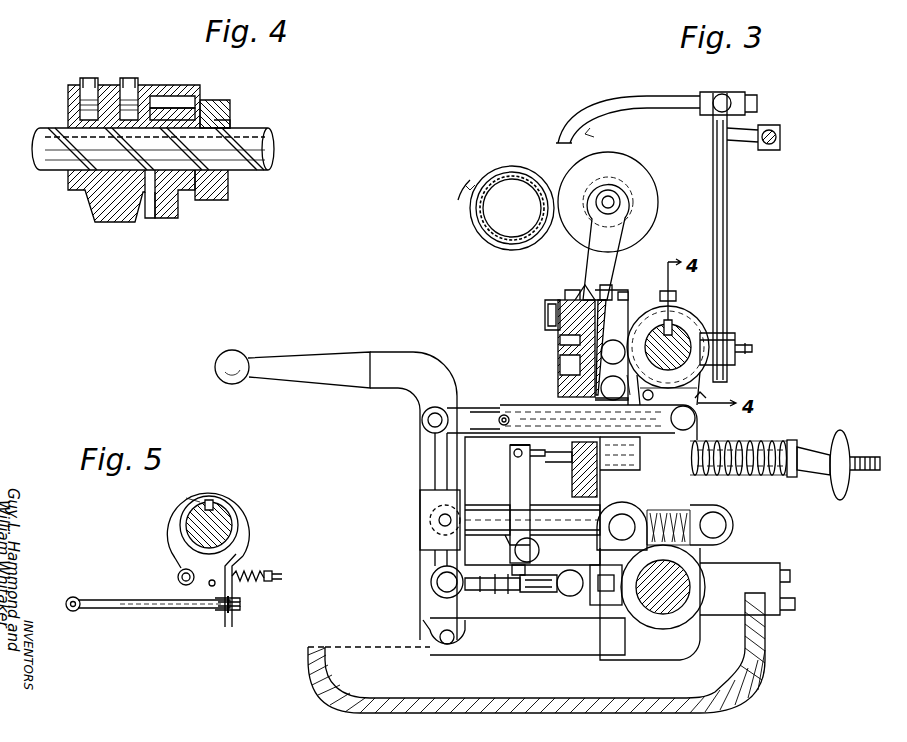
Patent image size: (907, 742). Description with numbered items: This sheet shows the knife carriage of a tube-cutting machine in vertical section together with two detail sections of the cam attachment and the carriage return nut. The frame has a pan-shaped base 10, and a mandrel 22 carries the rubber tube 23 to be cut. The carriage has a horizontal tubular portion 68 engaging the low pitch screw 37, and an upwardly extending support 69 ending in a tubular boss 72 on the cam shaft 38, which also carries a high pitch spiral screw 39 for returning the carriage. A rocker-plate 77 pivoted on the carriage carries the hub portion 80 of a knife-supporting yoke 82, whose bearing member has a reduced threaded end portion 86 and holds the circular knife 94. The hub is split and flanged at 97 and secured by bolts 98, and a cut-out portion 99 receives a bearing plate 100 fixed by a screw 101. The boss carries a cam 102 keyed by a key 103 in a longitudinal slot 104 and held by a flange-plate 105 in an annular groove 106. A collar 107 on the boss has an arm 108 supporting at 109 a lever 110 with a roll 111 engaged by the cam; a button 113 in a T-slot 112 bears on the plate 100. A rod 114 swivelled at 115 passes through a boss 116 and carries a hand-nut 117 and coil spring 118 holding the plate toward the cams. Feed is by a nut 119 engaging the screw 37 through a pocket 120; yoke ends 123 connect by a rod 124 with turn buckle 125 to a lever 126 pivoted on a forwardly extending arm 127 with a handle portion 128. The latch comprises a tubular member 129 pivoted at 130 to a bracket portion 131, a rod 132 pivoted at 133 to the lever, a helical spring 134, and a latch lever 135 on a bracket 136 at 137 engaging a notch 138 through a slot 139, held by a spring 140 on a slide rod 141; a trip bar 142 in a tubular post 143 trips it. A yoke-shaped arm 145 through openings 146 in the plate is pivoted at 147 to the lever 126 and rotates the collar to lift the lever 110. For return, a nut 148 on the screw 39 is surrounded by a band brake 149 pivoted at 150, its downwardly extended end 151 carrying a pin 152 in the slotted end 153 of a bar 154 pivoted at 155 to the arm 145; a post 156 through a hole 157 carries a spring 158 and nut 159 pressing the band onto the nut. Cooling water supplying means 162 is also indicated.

In FIG. 3, the pan-shaped base 10 is at (326, 676).
In FIG. 3, the mandrel 22 is at (505, 172).
In FIG. 3, the tube 23 is at (540, 178).
In FIG. 3, the low pitch screw 37 is at (690, 580).
In FIG. 4, the cam shaft 38 is at (270, 150).
In FIG. 5, the cam shaft 38 is at (236, 522).
In FIG. 3, the cam shaft 38 is at (669, 352).
In FIG. 4, the high pitch spiral screw 39 is at (62, 172).
In FIG. 3, the horizontal tubular portion 68 is at (685, 614).
In FIG. 4, the support 69 is at (106, 222).
In FIG. 4, the tubular boss 72 is at (68, 118).
In FIG. 3, the rocker-plate 77 is at (598, 472).
In FIG. 3, the hub portion 80 is at (580, 296).
In FIG. 3, the knife-supporting yoke 82 is at (593, 260).
In FIG. 3, the reduced threaded end portion 86 is at (618, 198).
In FIG. 3, the circular knife 94 is at (625, 160).
In FIG. 3, the flange 97 is at (545, 316).
In FIG. 3, the bolts 98 is at (548, 303).
In FIG. 3, the cut-out portion 99 is at (560, 340).
In FIG. 3, the bearing plate 100 is at (572, 288).
In FIG. 3, the screw 101 is at (565, 348).
In FIG. 4, the cam 102 is at (228, 197).
In FIG. 3, the cam 102 is at (707, 334).
In FIG. 4, the key 103 is at (225, 122).
In FIG. 5, the key 103 is at (211, 498).
In FIG. 3, the key 103 is at (690, 325).
In FIG. 4, the longitudinal slot 104 is at (232, 126).
In FIG. 5, the longitudinal slot 104 is at (186, 507).
In FIG. 3, the longitudinal slot 104 is at (722, 341).
In FIG. 4, the flange-plate 105 is at (155, 92).
In FIG. 3, the flange-plate 105 is at (678, 297).
In FIG. 4, the annular groove 106 is at (215, 118).
In FIG. 4, the collar 107 is at (180, 198).
In FIG. 3, the collar 107 is at (752, 350).
In FIG. 4, the arm 108 is at (160, 220).
In FIG. 3, the arm 108 is at (656, 426).
In FIG. 3, the pivot 109 is at (590, 398).
In FIG. 3, the lever 110 is at (620, 300).
In FIG. 3, the roll 111 is at (568, 366).
In FIG. 3, the T-slot 112 is at (624, 293).
In FIG. 3, the button 113 is at (606, 286).
In FIG. 3, the rod 114 is at (757, 446).
In FIG. 3, the swivel connection 115 is at (574, 461).
In FIG. 3, the boss 116 is at (688, 479).
In FIG. 3, the hand-nut 117 is at (851, 452).
In FIG. 3, the coil spring 118 is at (745, 477).
In FIG. 3, the nut 119 is at (576, 600).
In FIG. 3, the pocket 120 is at (612, 608).
In FIG. 3, the yoke ends 123 is at (567, 597).
In FIG. 3, the rod 124 is at (537, 594).
In FIG. 3, the turn buckle 125 is at (500, 592).
In FIG. 3, the lever 126 is at (422, 554).
In FIG. 3, the forwardly extending arm 127 is at (655, 652).
In FIG. 3, the handle portion 128 is at (305, 362).
In FIG. 3, the tubular member 129 is at (707, 509).
In FIG. 3, the pivot 130 is at (716, 525).
In FIG. 3, the bracket portion 131 is at (700, 549).
In FIG. 3, the rod 132 is at (478, 505).
In FIG. 3, the pivot 133 is at (428, 522).
In FIG. 3, the helical spring 134 is at (645, 503).
In FIG. 3, the latch lever 135 is at (530, 478).
In FIG. 3, the bracket 136 is at (510, 470).
In FIG. 3, the pivot 137 is at (513, 510).
In FIG. 3, the notch 138 is at (509, 544).
In FIG. 3, the slot 139 is at (532, 525).
In FIG. 3, the spring 140 is at (512, 447).
In FIG. 3, the slide rod 141 is at (529, 452).
In FIG. 3, the trip bar 142 is at (512, 570).
In FIG. 3, the tubular post 143 is at (540, 550).
In FIG. 3, the yoke-shaped arm 145 is at (495, 407).
In FIG. 3, the openings 146 is at (603, 442).
In FIG. 3, the pivot 147 is at (422, 423).
In FIG. 5, the nut 148 is at (236, 502).
In FIG. 3, the nut 148 is at (708, 384).
In FIG. 5, the band brake 149 is at (248, 540).
In FIG. 3, the band brake 149 is at (608, 398).
In FIG. 5, the pivot 150 is at (178, 575).
In FIG. 3, the pivot 150 is at (646, 400).
In FIG. 5, the downwardly extended end 151 is at (241, 598).
In FIG. 5, the pin 152 is at (227, 613).
In FIG. 5, the slotted end 153 is at (241, 608).
In FIG. 5, the bar 154 is at (168, 608).
In FIG. 3, the bar 154 is at (516, 417).
In FIG. 5, the pivot 155 is at (76, 598).
In FIG. 3, the pivot 155 is at (505, 414).
In FIG. 5, the post 156 is at (210, 584).
In FIG. 3, the post 156 is at (702, 404).
In FIG. 5, the hole 157 is at (240, 569).
In FIG. 5, the spring 158 is at (266, 582).
In FIG. 5, the nut 159 is at (273, 574).
In FIG. 3, the cooling water supplying means 162 is at (728, 200).